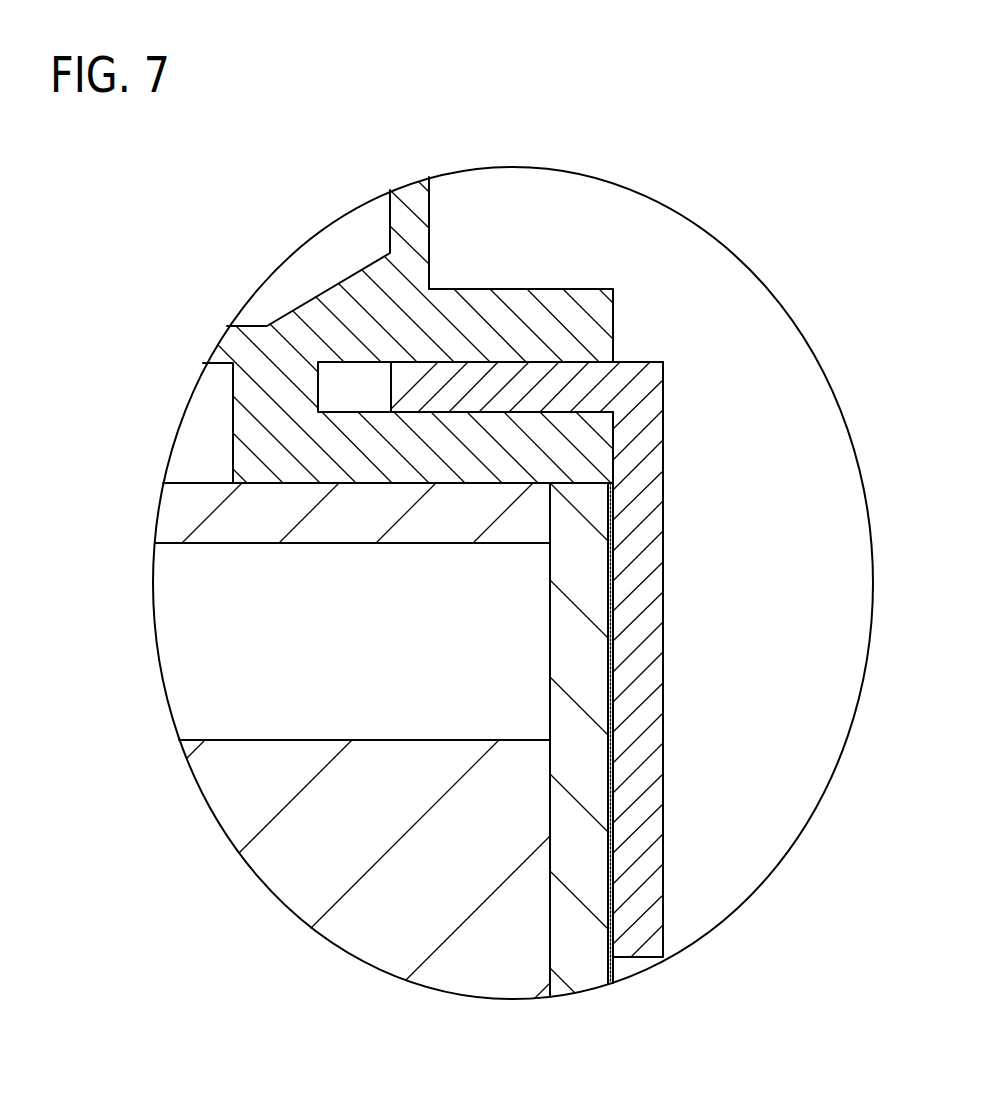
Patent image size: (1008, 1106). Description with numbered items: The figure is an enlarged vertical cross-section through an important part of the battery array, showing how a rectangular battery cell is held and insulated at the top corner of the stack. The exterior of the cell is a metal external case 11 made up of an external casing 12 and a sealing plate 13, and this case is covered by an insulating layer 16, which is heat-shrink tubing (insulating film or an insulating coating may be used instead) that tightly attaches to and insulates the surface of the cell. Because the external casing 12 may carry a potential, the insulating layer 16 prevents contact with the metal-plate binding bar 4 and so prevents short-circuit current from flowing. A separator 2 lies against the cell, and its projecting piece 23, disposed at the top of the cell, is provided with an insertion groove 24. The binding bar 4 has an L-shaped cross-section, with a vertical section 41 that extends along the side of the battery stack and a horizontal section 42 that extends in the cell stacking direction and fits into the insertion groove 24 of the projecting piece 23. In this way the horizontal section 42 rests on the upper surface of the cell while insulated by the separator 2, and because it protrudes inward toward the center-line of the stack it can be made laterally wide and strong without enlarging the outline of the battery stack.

The separator 2 is at (283, 420).
The binding bar 4 is at (602, 649).
The vertical section 41 is at (768, 395).
The horizontal section 42 is at (522, 380).
The insertion groove 24 is at (367, 378).
The projecting piece 23 is at (455, 443).
The insulating layer 16 is at (612, 673).
The sealing plate 13 is at (278, 518).
The external casing 12 is at (577, 633).
The metal external case 11 is at (381, 774).